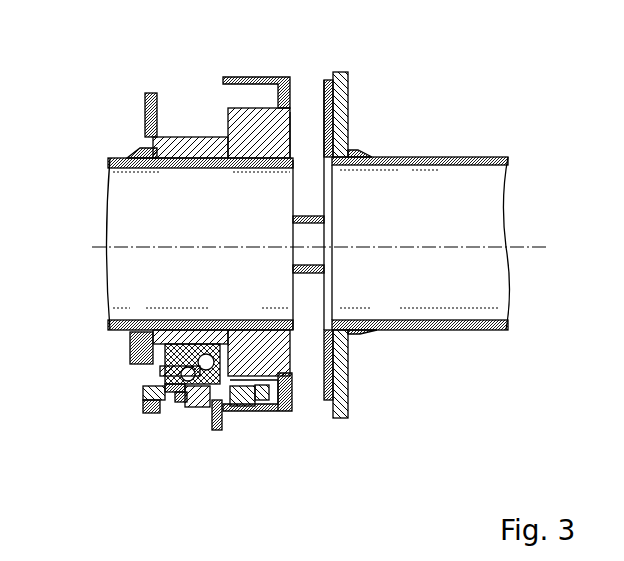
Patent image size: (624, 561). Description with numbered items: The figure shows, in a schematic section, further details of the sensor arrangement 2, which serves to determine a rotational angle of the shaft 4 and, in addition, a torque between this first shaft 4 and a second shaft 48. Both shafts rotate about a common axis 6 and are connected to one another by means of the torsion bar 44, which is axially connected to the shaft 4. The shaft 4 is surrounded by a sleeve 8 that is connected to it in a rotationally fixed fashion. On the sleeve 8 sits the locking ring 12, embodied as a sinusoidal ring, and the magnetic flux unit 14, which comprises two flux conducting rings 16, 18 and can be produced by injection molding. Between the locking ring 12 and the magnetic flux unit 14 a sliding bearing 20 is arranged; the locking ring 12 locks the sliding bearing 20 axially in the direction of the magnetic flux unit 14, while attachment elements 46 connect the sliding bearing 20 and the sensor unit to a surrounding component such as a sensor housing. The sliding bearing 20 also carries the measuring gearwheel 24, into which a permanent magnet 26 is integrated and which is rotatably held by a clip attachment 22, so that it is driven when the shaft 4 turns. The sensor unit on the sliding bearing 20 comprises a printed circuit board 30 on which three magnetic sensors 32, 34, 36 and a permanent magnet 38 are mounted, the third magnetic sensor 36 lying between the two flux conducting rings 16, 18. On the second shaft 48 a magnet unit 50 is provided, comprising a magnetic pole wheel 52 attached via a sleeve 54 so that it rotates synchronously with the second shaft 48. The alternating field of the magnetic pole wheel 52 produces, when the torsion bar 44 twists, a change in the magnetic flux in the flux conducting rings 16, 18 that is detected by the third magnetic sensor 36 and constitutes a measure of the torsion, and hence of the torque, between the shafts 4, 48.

The sensor arrangement 2 is at (375, 468).
The shaft 4 is at (122, 157).
The axis 6 is at (97, 248).
The sleeve 8 is at (300, 118).
The locking ring 12 is at (137, 128).
The magnetic flux unit 14 is at (296, 455).
The flux conducting ring 16 is at (241, 108).
The flux conducting ring 18 is at (258, 78).
The sliding bearing 20 is at (188, 129).
The clip attachment 22 is at (208, 342).
The measuring gearwheel 24 is at (165, 372).
The permanent magnet 26 is at (170, 387).
The printed circuit board 30 is at (150, 399).
The magnetic sensor 32 is at (178, 396).
The magnetic sensor 34 is at (183, 418).
The third magnetic sensor 36 is at (262, 420).
The permanent magnet 38 is at (146, 418).
The torsion bar 44 is at (313, 272).
The attachment elements 46 is at (223, 441).
The second shaft 48 is at (475, 160).
The magnet unit 50 is at (370, 100).
The magnetic pole wheel 52 is at (325, 100).
The sleeve 54 is at (357, 152).